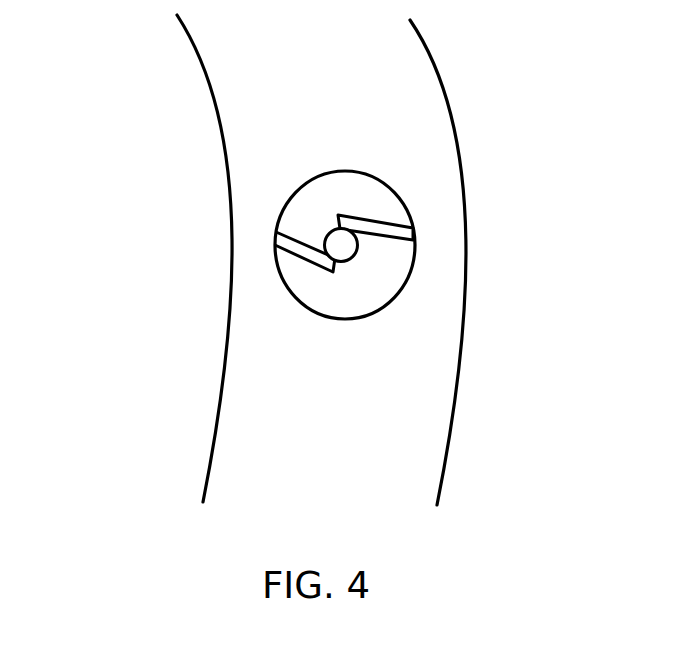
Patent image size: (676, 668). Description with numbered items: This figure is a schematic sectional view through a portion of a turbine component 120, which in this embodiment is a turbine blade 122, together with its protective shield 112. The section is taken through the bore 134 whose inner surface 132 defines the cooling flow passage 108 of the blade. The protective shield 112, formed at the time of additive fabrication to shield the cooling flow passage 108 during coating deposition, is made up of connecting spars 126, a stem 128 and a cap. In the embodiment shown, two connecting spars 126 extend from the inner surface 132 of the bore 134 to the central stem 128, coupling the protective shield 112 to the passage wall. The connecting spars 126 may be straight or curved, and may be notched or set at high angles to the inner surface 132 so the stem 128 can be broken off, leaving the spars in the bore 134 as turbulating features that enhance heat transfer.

The turbine component 120 is at (289, 254).
The turbine blade 122 is at (452, 122).
The protective shield 112 is at (336, 181).
The cooling flow passage 108 is at (336, 236).
The bore 134 is at (276, 197).
The inner surface 132 is at (300, 212).
The connecting spars 126 is at (302, 252).
The stem 128 is at (360, 250).